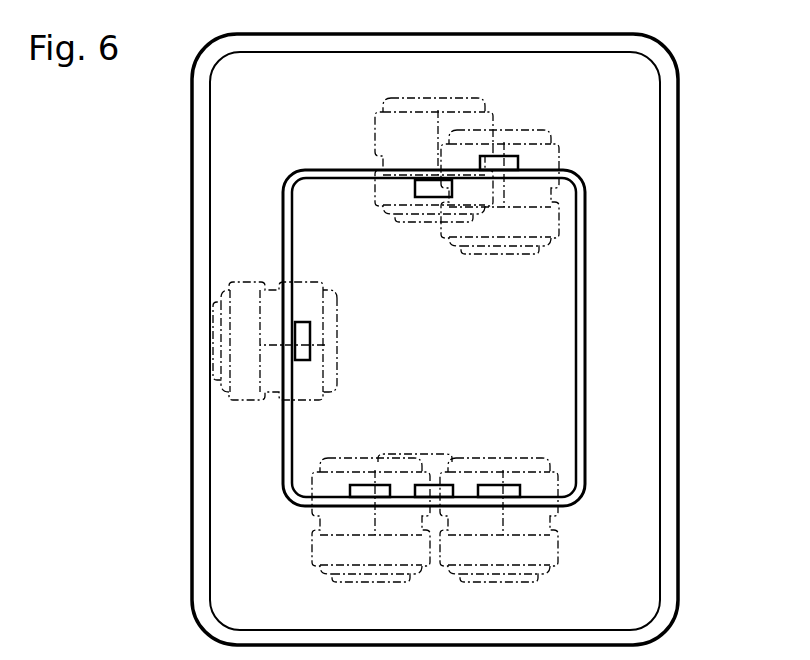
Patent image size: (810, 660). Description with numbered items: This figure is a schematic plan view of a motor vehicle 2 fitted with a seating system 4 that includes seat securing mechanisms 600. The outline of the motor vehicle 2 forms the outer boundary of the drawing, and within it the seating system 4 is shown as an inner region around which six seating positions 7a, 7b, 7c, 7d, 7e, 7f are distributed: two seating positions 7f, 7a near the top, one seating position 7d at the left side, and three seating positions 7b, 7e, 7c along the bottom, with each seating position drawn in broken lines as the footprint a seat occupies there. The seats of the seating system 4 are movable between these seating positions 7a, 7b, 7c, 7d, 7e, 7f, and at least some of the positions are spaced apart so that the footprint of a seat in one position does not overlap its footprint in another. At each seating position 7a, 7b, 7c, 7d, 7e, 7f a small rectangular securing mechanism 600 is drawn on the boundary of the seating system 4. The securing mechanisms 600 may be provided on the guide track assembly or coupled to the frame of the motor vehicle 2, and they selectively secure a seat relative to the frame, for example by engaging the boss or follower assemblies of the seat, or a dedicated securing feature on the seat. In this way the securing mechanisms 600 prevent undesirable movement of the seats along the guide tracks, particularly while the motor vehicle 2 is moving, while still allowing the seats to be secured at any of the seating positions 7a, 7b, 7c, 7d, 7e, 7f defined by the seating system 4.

The motor vehicle 2 is at (708, 82).
The seating system 4 is at (622, 320).
The seating position 7a is at (507, 254).
The seating position 7b is at (310, 560).
The seating position 7c is at (558, 548).
The seating position 7d is at (252, 399).
The seating position 7e is at (430, 462).
The seating position 7f is at (410, 222).
The securing mechanism 600 is at (430, 190).